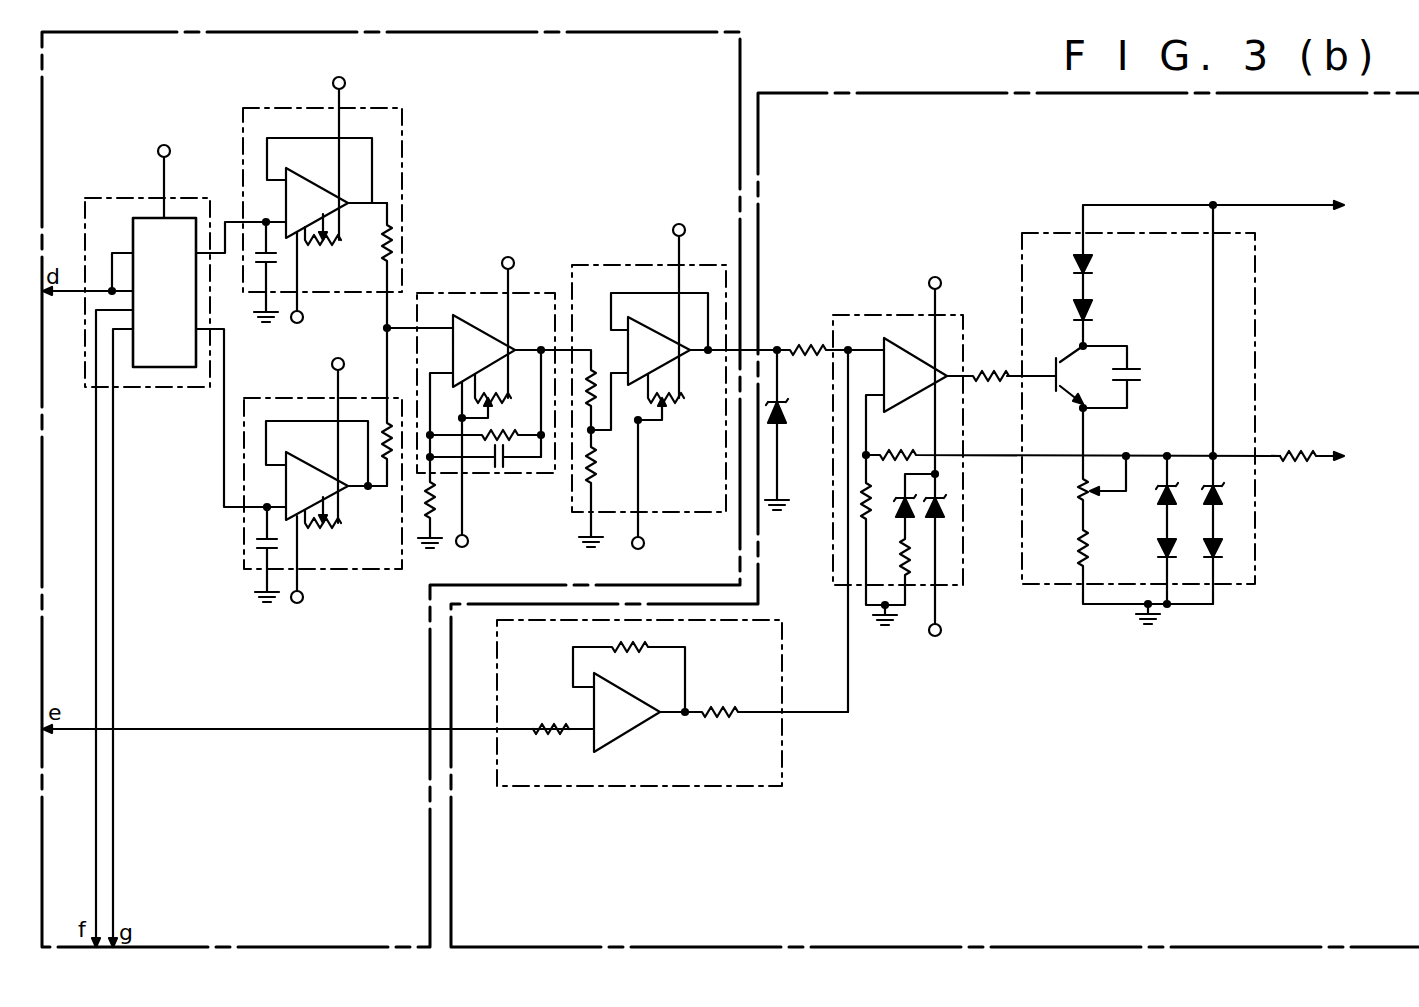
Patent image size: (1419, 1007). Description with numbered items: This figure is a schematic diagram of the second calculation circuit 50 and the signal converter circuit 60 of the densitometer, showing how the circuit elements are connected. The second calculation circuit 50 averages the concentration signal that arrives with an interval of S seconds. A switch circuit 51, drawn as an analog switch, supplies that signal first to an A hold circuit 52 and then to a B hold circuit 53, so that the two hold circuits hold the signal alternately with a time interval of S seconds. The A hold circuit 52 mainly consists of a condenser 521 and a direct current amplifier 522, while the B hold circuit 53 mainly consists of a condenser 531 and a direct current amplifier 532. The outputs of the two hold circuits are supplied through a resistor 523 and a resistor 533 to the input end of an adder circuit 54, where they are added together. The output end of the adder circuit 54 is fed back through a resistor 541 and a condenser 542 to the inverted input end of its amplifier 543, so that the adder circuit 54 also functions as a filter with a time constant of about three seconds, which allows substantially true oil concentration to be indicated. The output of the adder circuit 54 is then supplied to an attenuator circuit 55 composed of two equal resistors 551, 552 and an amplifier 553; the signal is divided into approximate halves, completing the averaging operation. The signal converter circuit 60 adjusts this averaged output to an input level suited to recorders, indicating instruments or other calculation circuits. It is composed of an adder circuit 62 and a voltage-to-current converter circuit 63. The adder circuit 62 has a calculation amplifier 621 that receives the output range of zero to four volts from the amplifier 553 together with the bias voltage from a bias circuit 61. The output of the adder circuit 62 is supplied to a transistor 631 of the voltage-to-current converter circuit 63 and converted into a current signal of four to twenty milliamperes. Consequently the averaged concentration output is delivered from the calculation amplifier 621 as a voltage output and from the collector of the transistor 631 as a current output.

The second calculation circuit 50 is at (743, 67).
The switch circuit 51 is at (113, 198).
The A hold circuit 52 is at (326, 201).
The condenser 521 is at (246, 268).
The direct current amplifier 522 is at (331, 182).
The resistor 523 is at (392, 240).
The B hold circuit 53 is at (299, 477).
The condenser 531 is at (251, 546).
The direct current amplifier 532 is at (330, 466).
The resistor 533 is at (391, 479).
The adder circuit 54 is at (488, 403).
The resistor 541 is at (493, 434).
The condenser 542 is at (500, 467).
The amplifier 543 is at (500, 342).
The attenuator circuit 55 is at (674, 387).
The resistor 551 is at (600, 374).
The resistor 552 is at (600, 465).
The amplifier 553 is at (670, 342).
The signal converter circuit 60 is at (905, 92).
The bias circuit 61 is at (783, 773).
The adder circuit 62 is at (1054, 457).
The calculation amplifier 621 is at (919, 395).
The voltage-to-current converter circuit 63 is at (1211, 408).
The transistor 631 is at (1054, 371).